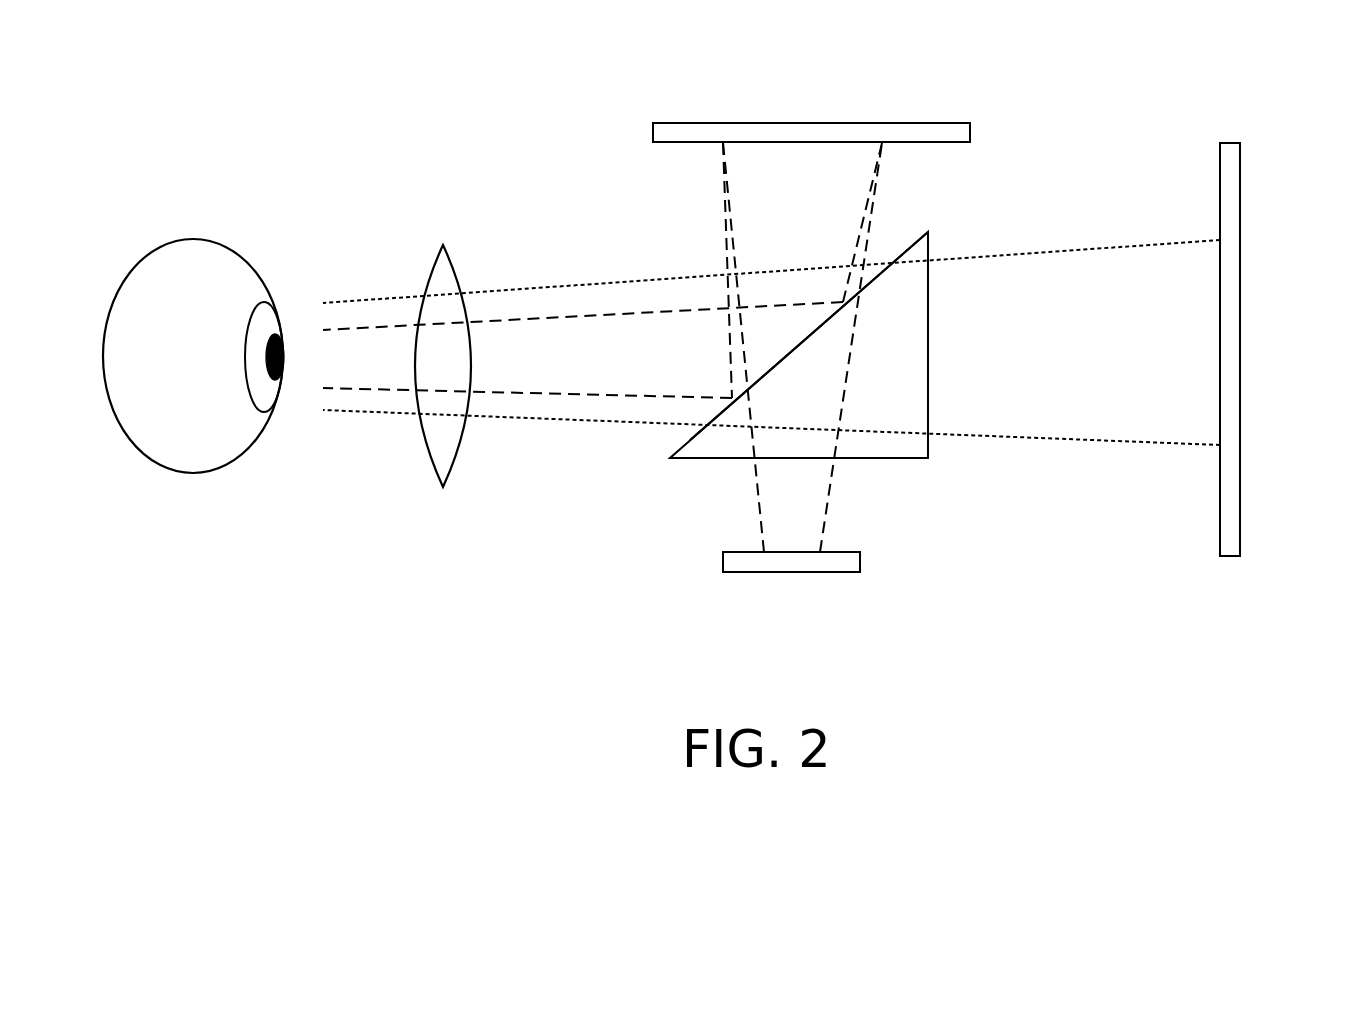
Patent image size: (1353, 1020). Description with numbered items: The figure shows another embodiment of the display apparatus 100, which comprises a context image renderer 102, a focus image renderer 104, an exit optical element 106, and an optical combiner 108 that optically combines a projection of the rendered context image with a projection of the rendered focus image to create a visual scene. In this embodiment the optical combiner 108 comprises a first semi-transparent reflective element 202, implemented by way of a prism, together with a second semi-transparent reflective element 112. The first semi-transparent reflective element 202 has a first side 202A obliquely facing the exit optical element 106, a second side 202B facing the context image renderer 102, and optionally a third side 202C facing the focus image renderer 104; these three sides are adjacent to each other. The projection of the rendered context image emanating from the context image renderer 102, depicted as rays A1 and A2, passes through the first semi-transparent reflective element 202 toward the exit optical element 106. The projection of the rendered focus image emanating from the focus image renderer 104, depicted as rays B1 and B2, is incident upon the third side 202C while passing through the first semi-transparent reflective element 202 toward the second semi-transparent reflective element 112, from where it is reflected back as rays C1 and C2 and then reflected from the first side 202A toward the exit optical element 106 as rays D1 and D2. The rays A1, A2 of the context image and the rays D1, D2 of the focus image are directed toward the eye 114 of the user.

The display apparatus 100 is at (1167, 62).
The context image renderer 102 is at (1240, 177).
The focus image renderer 104 is at (860, 556).
The exit optical element 106 is at (452, 257).
The optical combiner 108 is at (958, 218).
The second semi-transparent reflective element 112 is at (920, 123).
The eye 114 is at (192, 473).
The first semi-transparent reflective element 202 is at (670, 458).
The first side 202A is at (697, 435).
The second side 202B is at (927, 365).
The third side 202C is at (898, 457).
The ray A1 is at (1082, 250).
The ray A2 is at (1083, 440).
The ray B1 is at (830, 502).
The ray B2 is at (760, 503).
The ray C1 is at (858, 248).
The ray C2 is at (728, 255).
The ray D1 is at (500, 323).
The ray D2 is at (562, 393).